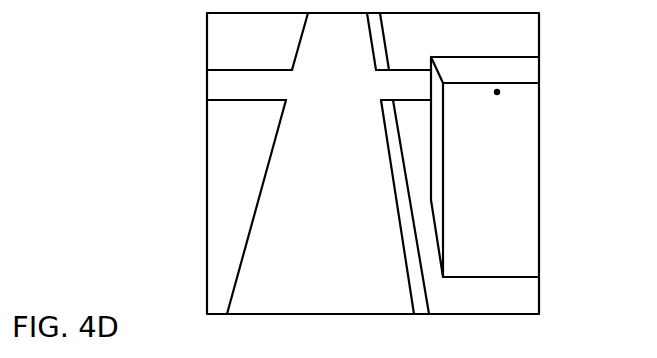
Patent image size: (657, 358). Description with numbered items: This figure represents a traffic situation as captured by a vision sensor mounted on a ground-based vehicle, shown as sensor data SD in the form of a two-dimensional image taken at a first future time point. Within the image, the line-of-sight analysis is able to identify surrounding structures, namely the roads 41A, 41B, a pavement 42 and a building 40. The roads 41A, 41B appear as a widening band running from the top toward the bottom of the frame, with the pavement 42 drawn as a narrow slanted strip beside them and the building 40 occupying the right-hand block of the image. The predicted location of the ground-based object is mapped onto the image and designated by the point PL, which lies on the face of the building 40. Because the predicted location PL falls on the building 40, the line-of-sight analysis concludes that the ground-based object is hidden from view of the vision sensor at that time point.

The sensor data SD is at (540, 35).
The predicted location PL is at (497, 92).
The building 40 is at (498, 200).
The road 41A is at (267, 248).
The road 41B is at (245, 83).
The pavement 42 is at (417, 278).